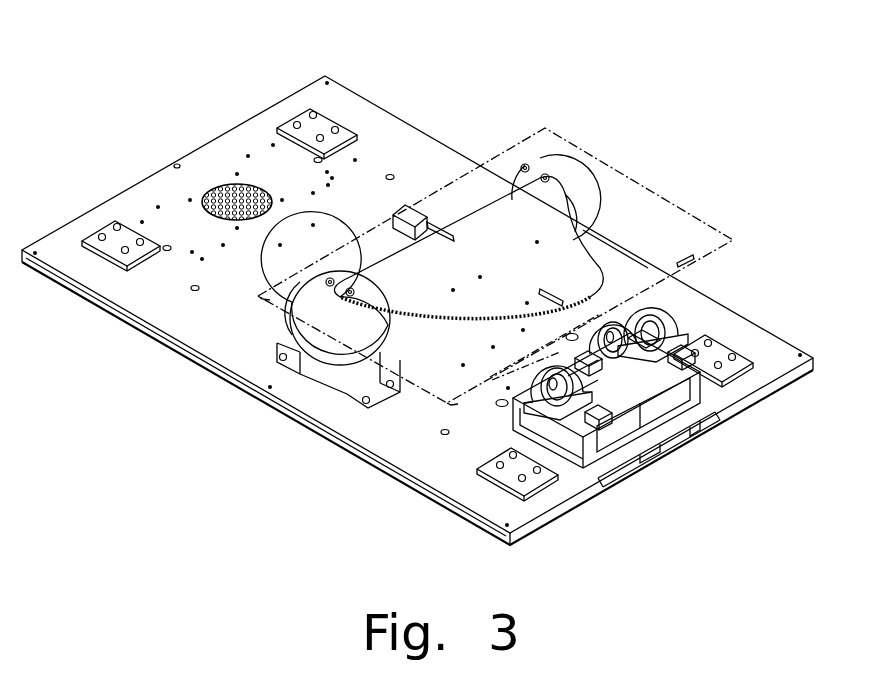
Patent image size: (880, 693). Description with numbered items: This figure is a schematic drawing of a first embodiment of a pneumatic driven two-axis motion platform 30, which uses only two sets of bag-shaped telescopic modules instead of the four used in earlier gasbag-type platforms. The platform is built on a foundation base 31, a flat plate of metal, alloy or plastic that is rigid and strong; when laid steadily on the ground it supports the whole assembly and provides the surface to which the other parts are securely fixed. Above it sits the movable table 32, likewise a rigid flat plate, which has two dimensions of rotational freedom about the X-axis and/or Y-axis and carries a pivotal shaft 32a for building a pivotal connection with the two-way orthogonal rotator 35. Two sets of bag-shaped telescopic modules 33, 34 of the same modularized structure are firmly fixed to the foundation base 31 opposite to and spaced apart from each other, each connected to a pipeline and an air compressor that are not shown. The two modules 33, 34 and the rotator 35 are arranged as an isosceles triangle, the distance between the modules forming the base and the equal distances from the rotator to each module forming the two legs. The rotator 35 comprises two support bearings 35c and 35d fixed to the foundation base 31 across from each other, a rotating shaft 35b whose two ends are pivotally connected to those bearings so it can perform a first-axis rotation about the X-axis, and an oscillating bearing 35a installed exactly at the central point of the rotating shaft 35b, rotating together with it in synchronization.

The pneumatic driven two-axis motion platform 30 is at (188, 146).
The foundation base 31 is at (70, 250).
The movable table 32 is at (468, 253).
The pivotal shaft 32a is at (423, 228).
The bag-shaped telescopic module 33 is at (323, 278).
The bag-shaped telescopic module 34 is at (518, 163).
The two-way orthogonal rotator 35 is at (538, 107).
The oscillating bearing 35a is at (607, 325).
The rotating shaft 35b is at (641, 318).
The support bearing 35c is at (561, 370).
The support bearing 35d is at (657, 312).